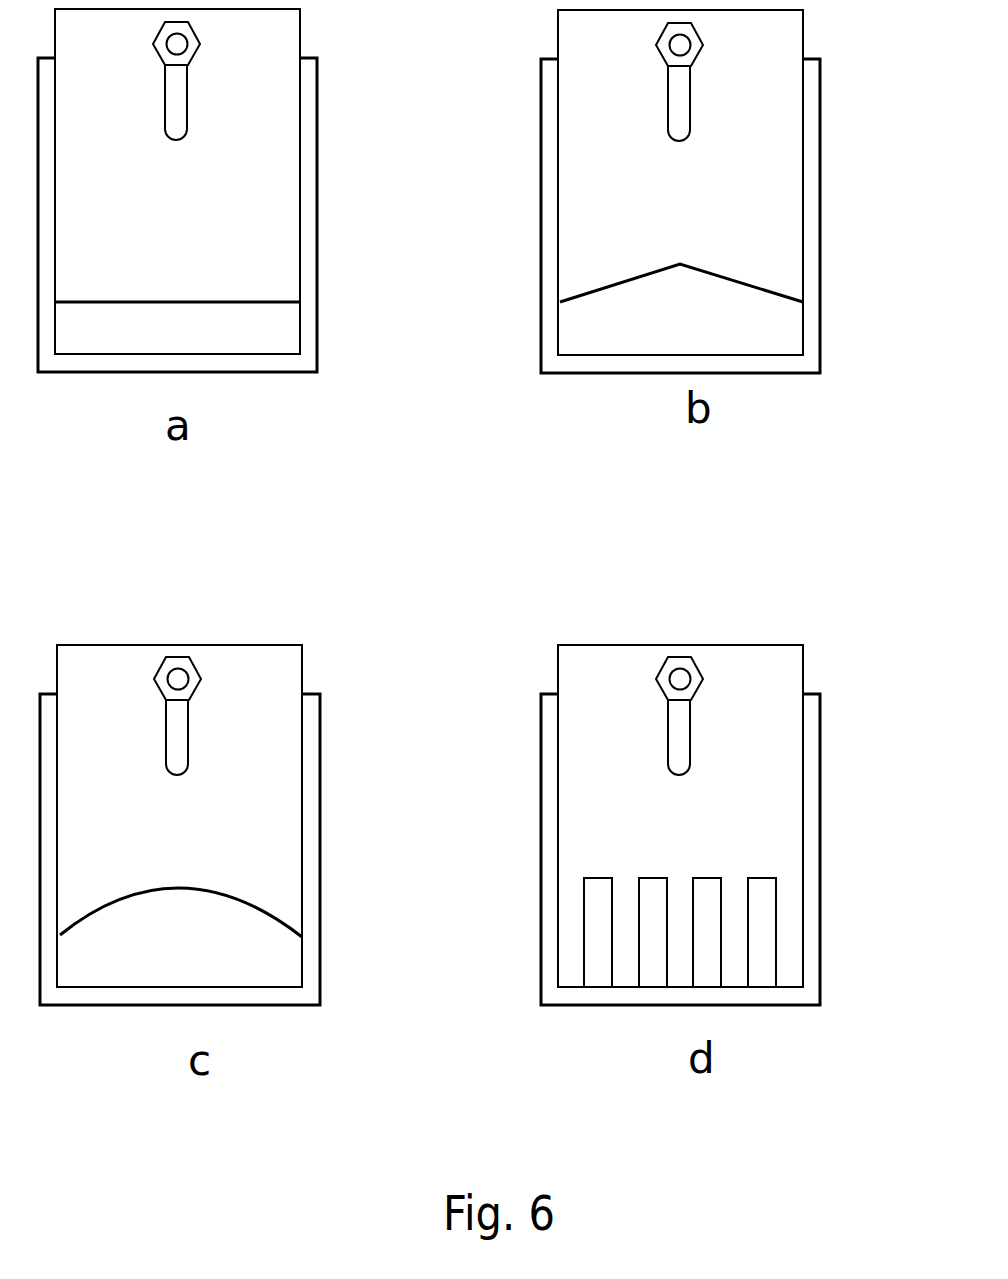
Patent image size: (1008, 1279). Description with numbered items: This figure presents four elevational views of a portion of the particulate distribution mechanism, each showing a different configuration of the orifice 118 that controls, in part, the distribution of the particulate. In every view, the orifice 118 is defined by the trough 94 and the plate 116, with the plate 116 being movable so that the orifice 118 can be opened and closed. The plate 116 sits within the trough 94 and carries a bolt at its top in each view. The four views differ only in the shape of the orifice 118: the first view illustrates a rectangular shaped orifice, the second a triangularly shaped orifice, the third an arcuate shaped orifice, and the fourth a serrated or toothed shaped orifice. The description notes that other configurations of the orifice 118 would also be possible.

The trough 94 is at (307, 279).
The plate 116 is at (196, 209).
The orifice 118 is at (205, 327).